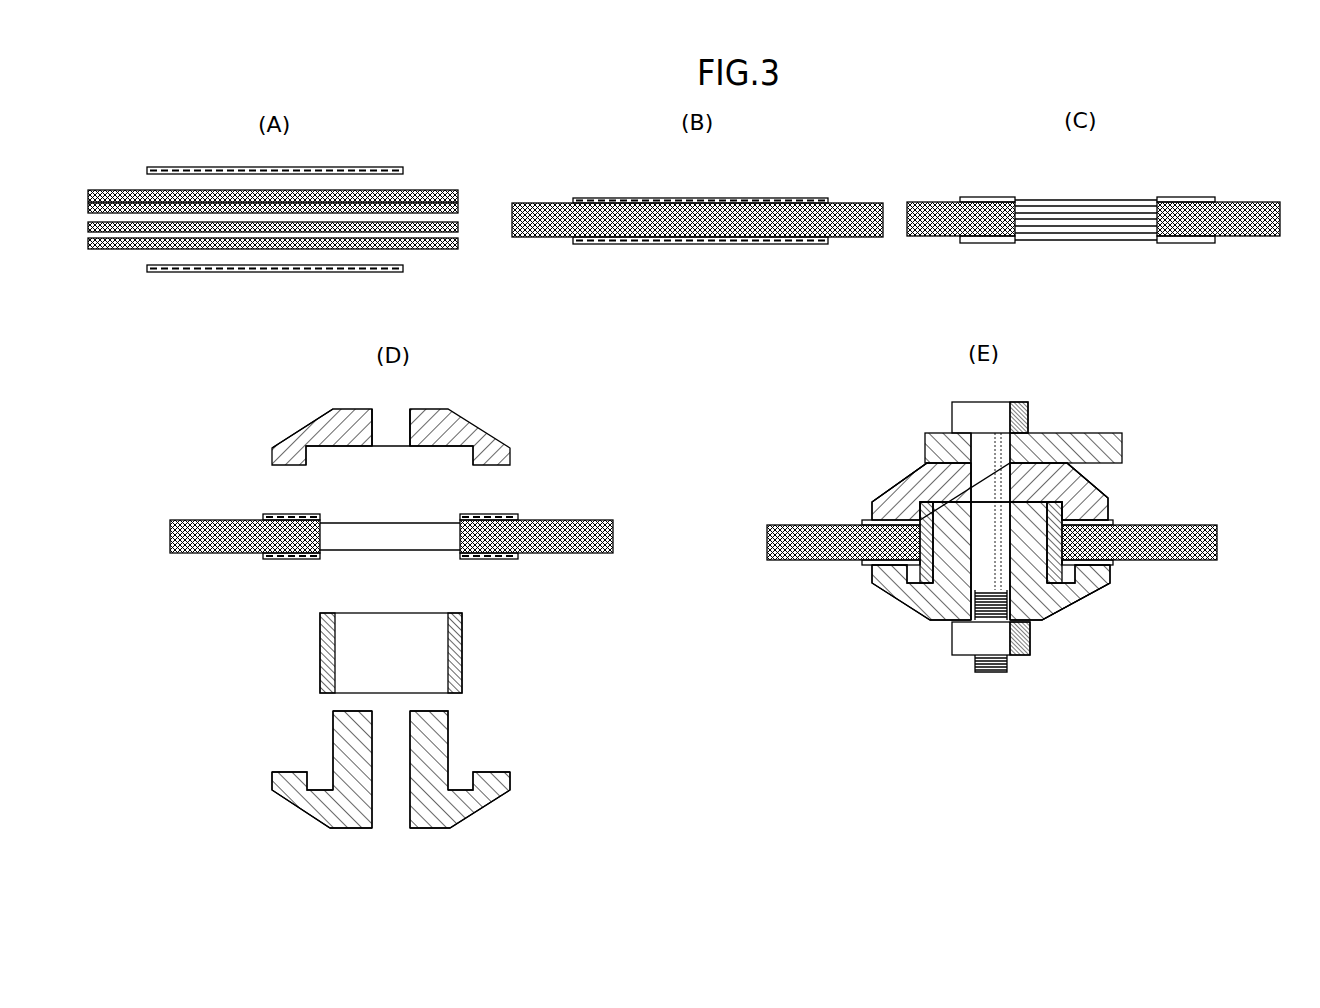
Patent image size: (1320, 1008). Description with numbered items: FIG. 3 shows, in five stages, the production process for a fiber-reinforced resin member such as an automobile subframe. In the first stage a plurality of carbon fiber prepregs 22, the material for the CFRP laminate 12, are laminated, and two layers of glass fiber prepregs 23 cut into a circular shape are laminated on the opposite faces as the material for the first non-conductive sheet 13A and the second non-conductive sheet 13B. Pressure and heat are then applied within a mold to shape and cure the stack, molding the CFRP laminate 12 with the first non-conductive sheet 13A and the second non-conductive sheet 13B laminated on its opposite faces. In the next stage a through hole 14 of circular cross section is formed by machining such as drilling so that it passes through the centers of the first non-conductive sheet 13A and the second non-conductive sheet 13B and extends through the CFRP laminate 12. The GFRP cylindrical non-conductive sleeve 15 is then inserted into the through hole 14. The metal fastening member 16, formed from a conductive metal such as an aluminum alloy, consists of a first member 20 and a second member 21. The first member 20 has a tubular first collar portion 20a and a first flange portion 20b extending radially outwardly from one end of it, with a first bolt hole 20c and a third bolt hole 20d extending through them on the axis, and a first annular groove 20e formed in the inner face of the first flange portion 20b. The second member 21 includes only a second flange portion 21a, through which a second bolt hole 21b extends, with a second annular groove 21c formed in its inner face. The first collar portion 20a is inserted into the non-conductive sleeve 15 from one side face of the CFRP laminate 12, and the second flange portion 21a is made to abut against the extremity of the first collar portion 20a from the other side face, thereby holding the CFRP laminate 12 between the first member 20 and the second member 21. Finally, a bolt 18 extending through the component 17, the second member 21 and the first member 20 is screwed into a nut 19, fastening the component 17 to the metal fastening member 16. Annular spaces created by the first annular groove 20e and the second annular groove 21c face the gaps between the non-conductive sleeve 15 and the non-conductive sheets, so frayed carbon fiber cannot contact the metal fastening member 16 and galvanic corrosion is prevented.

The CFRP laminate 12 is at (847, 200).
The first non-conductive sheet 13A is at (773, 240).
The second non-conductive sheet 13B is at (783, 200).
The through hole 14 is at (1150, 225).
The non-conductive sleeve 15 is at (460, 652).
The metal fastening member 16 is at (853, 703).
The component 17 is at (1100, 440).
The bolt 18 is at (990, 418).
The nut 19 is at (1030, 645).
The first member 20 is at (688, 638).
The first collar portion 20a is at (345, 733).
The first flange portion 20b is at (313, 793).
The first bolt hole 20c is at (373, 730).
The third bolt hole 20d is at (373, 807).
The first annular groove 20e is at (457, 783).
The second member 21 is at (671, 518).
The second flange portion 21a is at (275, 457).
The second bolt hole 21b is at (382, 422).
The second annular groove 21c is at (347, 448).
The carbon fiber prepreg 22 is at (310, 197).
The glass fiber prepreg 23 is at (323, 167).